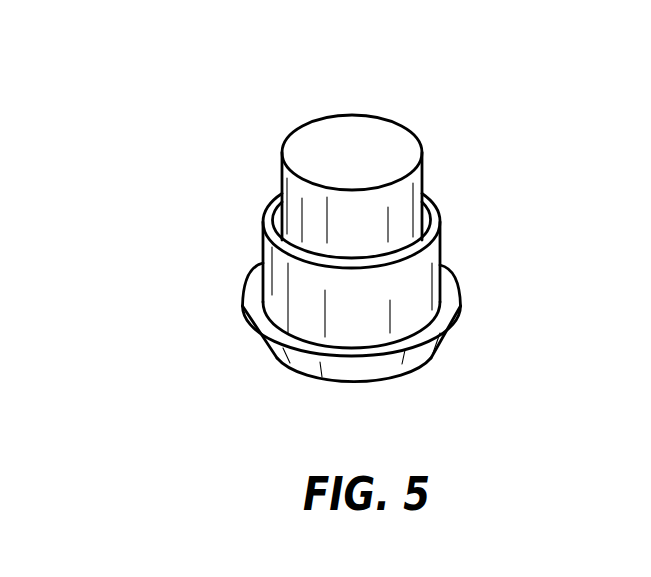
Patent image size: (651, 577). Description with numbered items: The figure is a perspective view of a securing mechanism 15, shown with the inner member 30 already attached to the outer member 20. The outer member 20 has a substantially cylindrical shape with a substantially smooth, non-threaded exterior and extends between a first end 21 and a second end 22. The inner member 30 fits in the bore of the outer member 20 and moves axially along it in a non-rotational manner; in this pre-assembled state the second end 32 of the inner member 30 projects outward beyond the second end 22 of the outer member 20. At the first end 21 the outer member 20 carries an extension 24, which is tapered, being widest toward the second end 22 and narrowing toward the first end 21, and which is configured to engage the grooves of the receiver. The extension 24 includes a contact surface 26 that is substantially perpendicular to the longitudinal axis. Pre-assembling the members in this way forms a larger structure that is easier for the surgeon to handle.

The securing mechanism 15 is at (195, 92).
The second end 32 is at (373, 132).
The inner member 30 is at (398, 200).
The second end 22 is at (430, 212).
The outer member 20 is at (423, 275).
The contact surface 26 is at (257, 308).
The extension 24 is at (278, 352).
The first end 21 is at (414, 366).